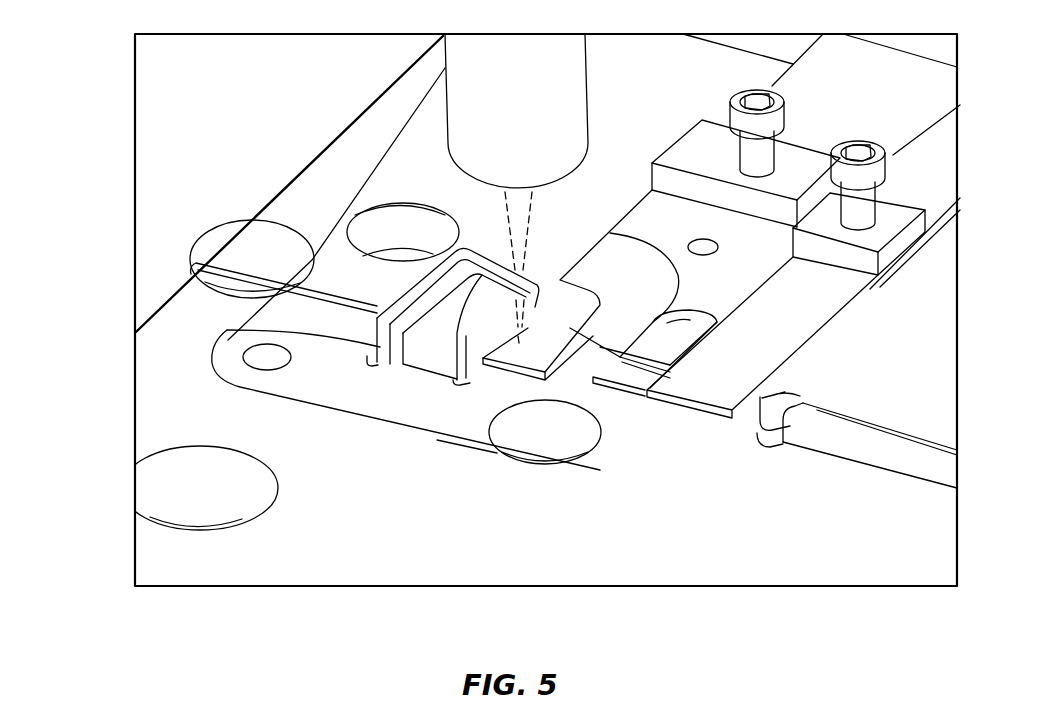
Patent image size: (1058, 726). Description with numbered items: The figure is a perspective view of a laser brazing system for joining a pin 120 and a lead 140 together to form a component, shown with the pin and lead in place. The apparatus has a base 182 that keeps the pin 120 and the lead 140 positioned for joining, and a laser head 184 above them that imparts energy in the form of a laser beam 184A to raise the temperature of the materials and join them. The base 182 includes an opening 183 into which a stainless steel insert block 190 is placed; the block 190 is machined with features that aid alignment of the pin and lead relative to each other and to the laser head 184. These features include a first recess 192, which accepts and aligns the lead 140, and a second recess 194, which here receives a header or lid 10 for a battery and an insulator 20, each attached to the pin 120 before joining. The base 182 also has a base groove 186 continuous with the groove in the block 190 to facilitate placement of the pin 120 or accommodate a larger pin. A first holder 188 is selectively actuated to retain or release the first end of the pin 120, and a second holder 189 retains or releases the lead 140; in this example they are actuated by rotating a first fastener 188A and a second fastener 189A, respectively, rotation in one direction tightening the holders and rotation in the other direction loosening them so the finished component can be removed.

The header or lid 10 is at (380, 347).
The insulator 20 is at (430, 378).
The pin 120 is at (245, 220).
The lead 140 is at (640, 385).
The base 182 is at (788, 530).
The opening 183 is at (360, 430).
The laser head 184 is at (475, 122).
The laser beam 184A is at (510, 243).
The base groove 186 is at (250, 296).
The first holder 188 is at (575, 392).
The first fastener 188A is at (757, 90).
The second holder 189 is at (712, 388).
The second fastener 189A is at (858, 143).
The insert block 190 is at (430, 412).
The first recess 192 is at (510, 372).
The second recess 194 is at (440, 415).